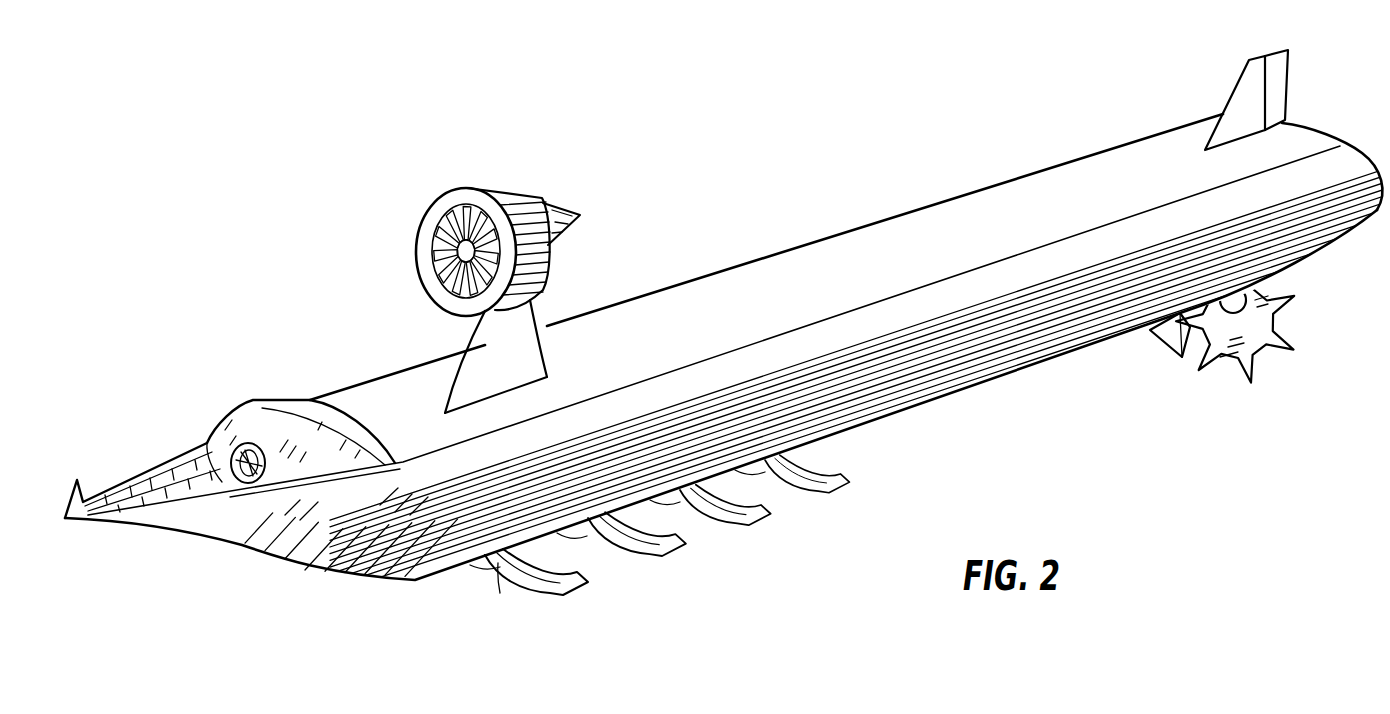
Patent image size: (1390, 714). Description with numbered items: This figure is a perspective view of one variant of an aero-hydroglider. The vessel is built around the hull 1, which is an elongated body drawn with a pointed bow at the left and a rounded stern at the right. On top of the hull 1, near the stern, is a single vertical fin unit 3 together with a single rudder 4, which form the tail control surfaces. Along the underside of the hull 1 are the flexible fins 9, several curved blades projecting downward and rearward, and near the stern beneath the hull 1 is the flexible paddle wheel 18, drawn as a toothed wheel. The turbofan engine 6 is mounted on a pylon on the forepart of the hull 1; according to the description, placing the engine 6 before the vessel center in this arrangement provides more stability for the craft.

The hull 1 is at (727, 270).
The vertical fin unit 3 is at (1237, 87).
The rudder 4 is at (1279, 77).
The turbofan engine 6 is at (497, 192).
The flexible fins 9 is at (468, 565).
The flexible paddle wheel 18 is at (1208, 367).